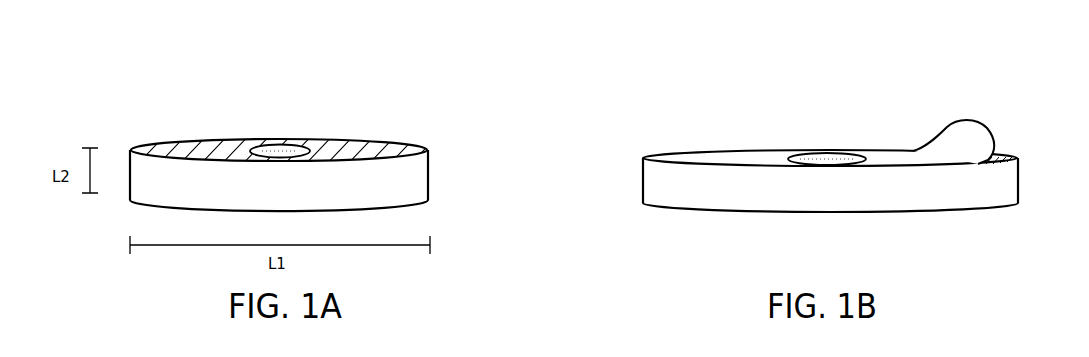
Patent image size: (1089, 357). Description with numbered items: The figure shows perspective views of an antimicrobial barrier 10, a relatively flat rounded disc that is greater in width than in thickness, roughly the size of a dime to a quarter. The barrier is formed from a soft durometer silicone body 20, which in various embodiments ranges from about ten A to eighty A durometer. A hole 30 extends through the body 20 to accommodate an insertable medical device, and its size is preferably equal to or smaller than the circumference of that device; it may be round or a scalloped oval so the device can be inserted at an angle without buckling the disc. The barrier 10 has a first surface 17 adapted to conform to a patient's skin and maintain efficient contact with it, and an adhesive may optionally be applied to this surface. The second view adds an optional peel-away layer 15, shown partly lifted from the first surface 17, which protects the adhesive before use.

In FIG. 1A, the antimicrobial barrier 10 is at (291, 69).
In FIG. 1A, the first surface 17 is at (392, 150).
In FIG. 1A, the soft durometer silicone body 20 is at (428, 175).
In FIG. 1A, the hole 30 is at (276, 144).
In FIG. 1B, the peel-away layer 15 is at (963, 120).